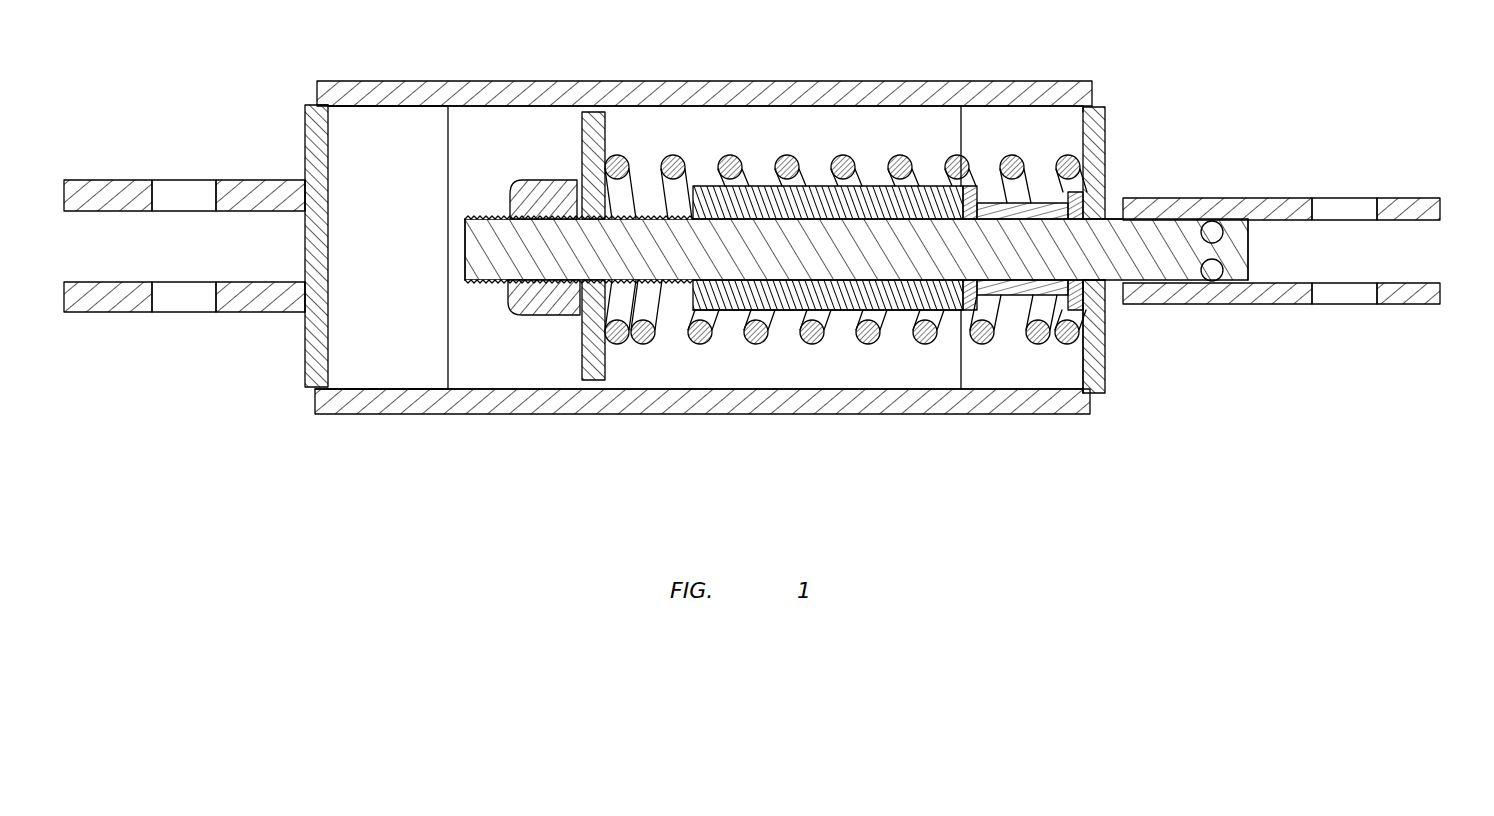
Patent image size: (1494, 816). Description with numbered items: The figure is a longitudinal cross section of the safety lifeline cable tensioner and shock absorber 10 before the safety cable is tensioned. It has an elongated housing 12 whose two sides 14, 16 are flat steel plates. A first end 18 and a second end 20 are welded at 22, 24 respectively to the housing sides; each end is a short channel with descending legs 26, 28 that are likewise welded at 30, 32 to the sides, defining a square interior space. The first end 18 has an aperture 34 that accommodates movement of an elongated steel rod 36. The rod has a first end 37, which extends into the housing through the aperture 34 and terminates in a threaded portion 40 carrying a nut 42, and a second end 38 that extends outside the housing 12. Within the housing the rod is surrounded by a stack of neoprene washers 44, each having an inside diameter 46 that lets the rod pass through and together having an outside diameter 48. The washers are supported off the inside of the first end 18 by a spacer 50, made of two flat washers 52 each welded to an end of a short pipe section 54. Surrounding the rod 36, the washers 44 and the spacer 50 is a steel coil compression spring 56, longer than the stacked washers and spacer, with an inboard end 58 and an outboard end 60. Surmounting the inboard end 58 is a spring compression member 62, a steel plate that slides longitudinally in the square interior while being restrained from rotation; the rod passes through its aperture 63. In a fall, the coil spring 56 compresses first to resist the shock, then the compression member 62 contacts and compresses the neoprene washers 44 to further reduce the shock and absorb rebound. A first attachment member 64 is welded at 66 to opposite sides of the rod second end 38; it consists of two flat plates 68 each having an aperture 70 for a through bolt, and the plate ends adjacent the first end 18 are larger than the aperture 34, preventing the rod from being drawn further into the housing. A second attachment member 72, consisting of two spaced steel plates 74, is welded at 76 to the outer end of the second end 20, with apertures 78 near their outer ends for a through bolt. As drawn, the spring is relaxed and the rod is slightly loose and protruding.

The safety lifeline cable tensioner and shock absorber 10 is at (932, 445).
The elongated housing 12 is at (800, 81).
The housing side 14 is at (468, 81).
The housing side 16 is at (667, 415).
The first end 18 is at (1096, 140).
The second end 20 is at (305, 130).
The weld 22 is at (1093, 106).
The weld 24 is at (317, 104).
The descending leg 26 is at (995, 140).
The descending leg 28 is at (391, 215).
The weld 30 is at (786, 107).
The weld 32 is at (348, 107).
The aperture 34 is at (1110, 287).
The elongated steel rod 36 is at (1112, 214).
The rod first end 37 is at (463, 232).
The rod second end 38 is at (1250, 242).
The threaded portion 40 is at (463, 282).
The nut 42 is at (516, 180).
The neoprene washers 44 is at (810, 186).
The washer inside diameter 46 is at (690, 280).
The washer outside diameter 48 is at (726, 312).
The spacer 50 is at (1045, 194).
The flat washers 52 is at (1080, 195).
The pipe section 54 is at (1002, 300).
The coil compression spring 56 is at (773, 339).
The spring inboard end 58 is at (610, 343).
The spring outboard end 60 is at (1100, 384).
The spring compression member 62 is at (582, 134).
The compression member aperture 63 is at (623, 213).
The first attachment member 64 is at (1285, 187).
The weld 66 is at (1222, 224).
The flat plates 68 is at (1412, 199).
The aperture 70 is at (1372, 208).
The second attachment member 72 is at (220, 154).
The steel plates 74 is at (83, 211).
The weld 76 is at (305, 180).
The apertures 78 is at (152, 196).